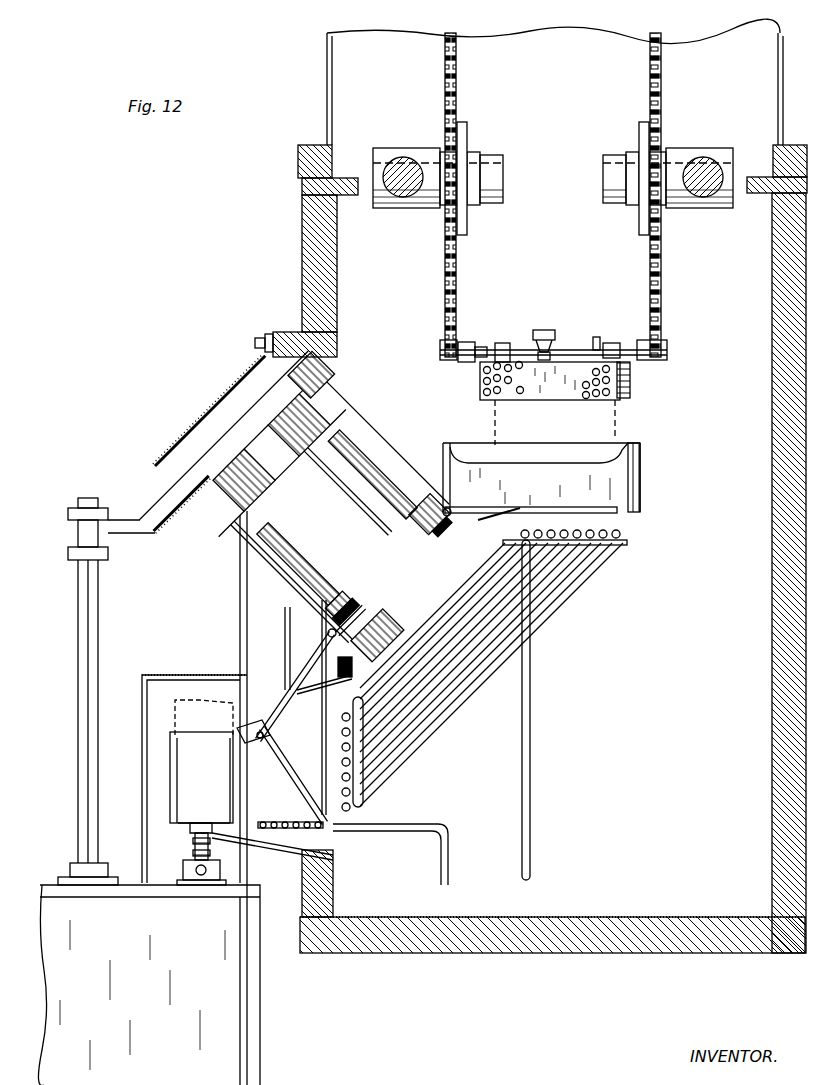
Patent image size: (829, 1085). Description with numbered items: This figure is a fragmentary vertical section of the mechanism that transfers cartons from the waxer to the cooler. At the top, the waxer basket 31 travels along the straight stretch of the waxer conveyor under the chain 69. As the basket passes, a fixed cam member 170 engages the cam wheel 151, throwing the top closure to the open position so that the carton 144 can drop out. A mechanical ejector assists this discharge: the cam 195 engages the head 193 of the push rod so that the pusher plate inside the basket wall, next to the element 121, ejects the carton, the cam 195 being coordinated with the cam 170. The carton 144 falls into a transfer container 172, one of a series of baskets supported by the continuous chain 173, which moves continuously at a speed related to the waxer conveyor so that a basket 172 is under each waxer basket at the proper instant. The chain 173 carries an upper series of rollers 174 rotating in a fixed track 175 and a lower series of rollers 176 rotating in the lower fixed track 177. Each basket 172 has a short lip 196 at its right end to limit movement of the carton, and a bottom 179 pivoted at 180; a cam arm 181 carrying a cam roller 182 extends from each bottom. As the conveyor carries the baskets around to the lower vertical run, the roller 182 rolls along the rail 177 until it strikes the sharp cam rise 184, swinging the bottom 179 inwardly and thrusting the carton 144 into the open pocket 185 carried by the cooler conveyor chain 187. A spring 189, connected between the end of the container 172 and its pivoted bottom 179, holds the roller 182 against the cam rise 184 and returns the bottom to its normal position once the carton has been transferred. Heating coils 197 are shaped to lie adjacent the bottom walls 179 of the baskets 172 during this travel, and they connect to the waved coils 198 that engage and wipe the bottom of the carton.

The chain 69 is at (661, 101).
The cylinder 121 is at (500, 343).
The cam 195 is at (536, 330).
The head 193 is at (548, 340).
The fixed cam member 170 is at (596, 337).
The cam wheel 151 is at (613, 343).
The carrier tray 31 is at (555, 400).
The carton 144 is at (617, 413).
The transfer container 172 is at (640, 462).
The bottom 179 is at (617, 512).
The pivot 180 is at (455, 509).
The cam roller 182 is at (518, 512).
The short lip 196 is at (642, 498).
The cam arm 181 is at (567, 562).
The heating coils 197 is at (542, 612).
The fixed track 175 is at (215, 522).
The rollers 174 is at (248, 520).
The continuous chain 173 is at (300, 577).
The lower fixed track 177 is at (443, 558).
The rollers 176 is at (368, 603).
The cam rise 184 is at (380, 660).
The spring 189 is at (282, 772).
The open pocket 185 is at (170, 773).
The cooler conveyor chain 187 is at (202, 880).
The coils 198 is at (293, 827).